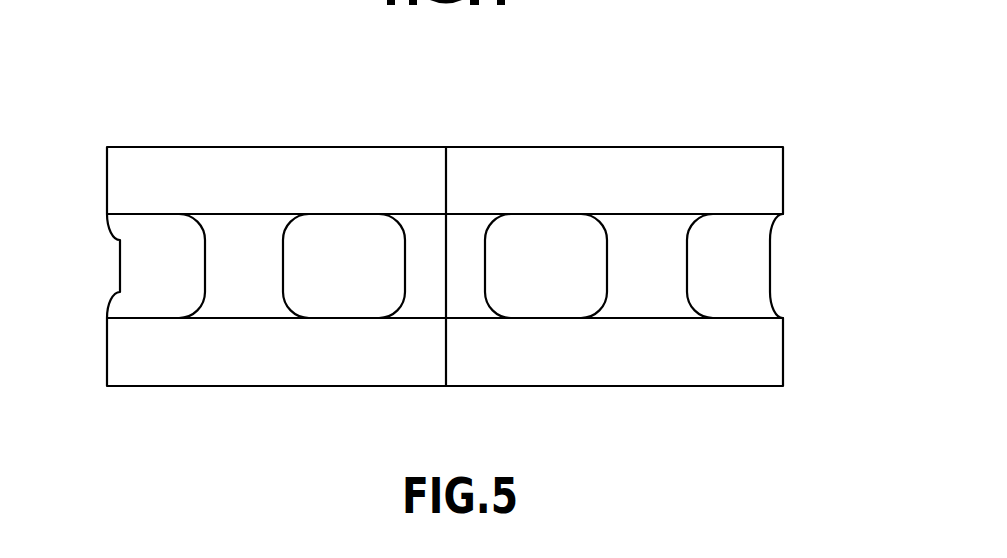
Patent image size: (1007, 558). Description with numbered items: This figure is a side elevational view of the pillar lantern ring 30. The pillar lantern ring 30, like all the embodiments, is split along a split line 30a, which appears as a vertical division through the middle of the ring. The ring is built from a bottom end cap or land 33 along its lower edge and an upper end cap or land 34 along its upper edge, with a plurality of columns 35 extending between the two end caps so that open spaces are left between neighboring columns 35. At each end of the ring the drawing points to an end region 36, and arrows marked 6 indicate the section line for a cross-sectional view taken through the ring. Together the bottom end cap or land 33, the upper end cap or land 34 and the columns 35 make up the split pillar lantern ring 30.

The pillar lantern ring 30 is at (713, 93).
The split line 30a is at (448, 168).
The bottom end cap or land 33 is at (703, 368).
The upper end cap or land 34 is at (725, 168).
The columns 35 is at (647, 255).
The end notch / end cell 36 is at (108, 177).
The section line 6- 6 is at (97, 266).